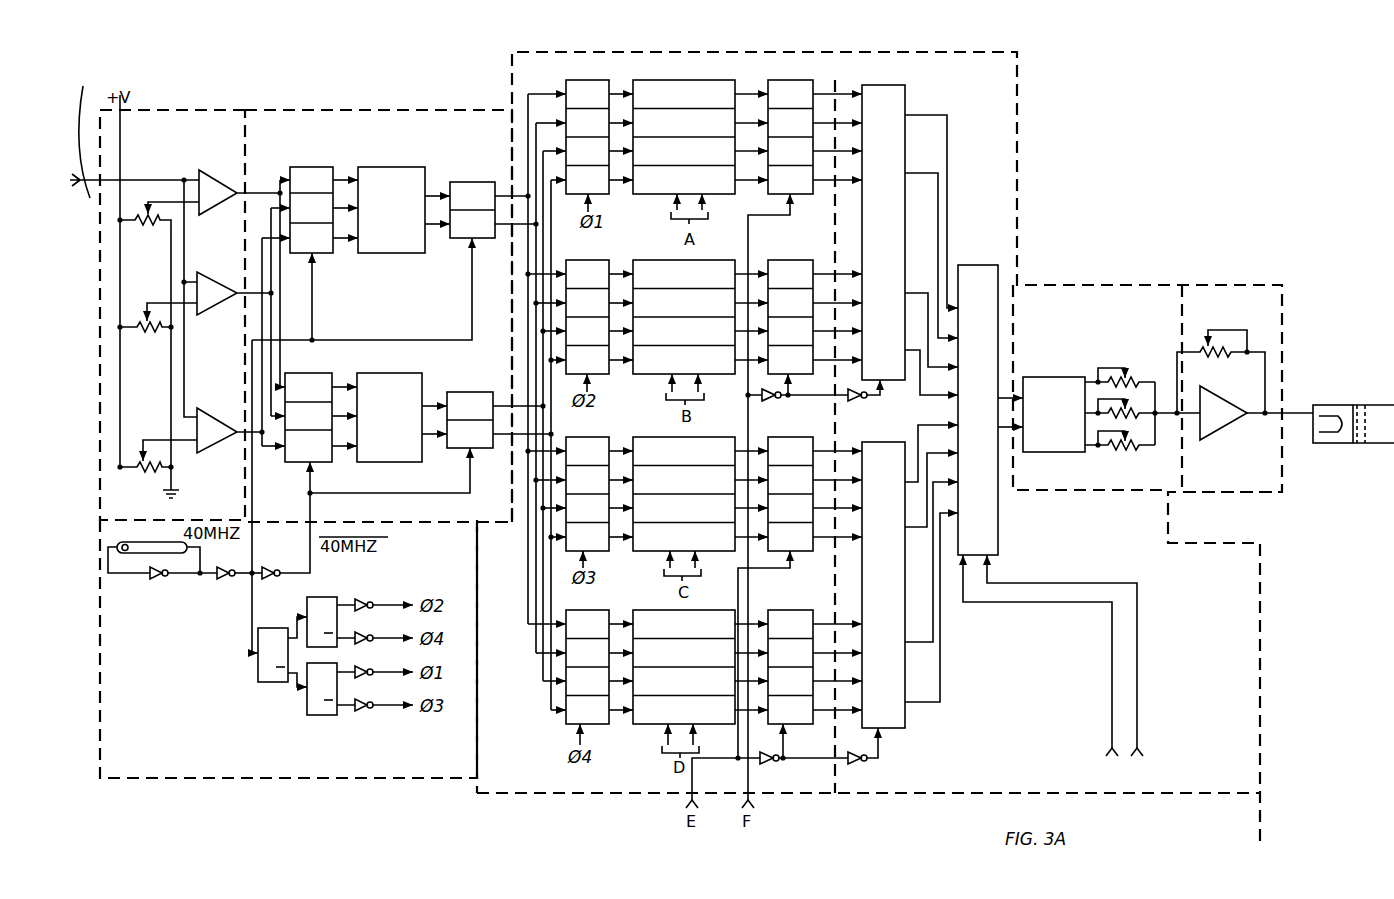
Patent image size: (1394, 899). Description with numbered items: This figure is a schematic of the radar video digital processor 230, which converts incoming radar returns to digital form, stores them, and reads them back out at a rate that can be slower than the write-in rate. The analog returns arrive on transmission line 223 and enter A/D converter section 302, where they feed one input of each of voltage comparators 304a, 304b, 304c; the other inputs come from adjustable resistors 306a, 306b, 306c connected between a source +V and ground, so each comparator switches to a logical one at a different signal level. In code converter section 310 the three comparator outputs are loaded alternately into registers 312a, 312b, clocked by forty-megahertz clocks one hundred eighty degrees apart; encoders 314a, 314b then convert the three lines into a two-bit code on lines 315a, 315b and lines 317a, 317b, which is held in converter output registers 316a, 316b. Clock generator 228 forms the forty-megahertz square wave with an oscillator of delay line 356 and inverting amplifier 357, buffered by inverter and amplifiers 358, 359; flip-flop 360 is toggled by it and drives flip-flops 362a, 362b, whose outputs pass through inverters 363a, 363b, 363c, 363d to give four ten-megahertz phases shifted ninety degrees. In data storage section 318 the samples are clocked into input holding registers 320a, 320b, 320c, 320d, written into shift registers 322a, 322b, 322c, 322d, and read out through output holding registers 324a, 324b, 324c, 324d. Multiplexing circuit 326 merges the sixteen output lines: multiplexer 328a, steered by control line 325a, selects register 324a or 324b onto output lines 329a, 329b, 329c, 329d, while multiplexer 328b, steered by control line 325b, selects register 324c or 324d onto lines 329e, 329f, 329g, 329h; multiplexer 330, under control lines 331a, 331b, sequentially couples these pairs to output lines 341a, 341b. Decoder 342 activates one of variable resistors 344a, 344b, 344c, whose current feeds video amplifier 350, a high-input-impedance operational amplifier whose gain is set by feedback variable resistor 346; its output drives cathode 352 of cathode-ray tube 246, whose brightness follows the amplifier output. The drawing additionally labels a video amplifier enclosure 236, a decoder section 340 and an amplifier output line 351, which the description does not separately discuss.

The transmission line 223 is at (129, 132).
The clock generator 228 is at (338, 776).
The radar video digital processor 230 is at (1020, 200).
The video amplifier 236 is at (1285, 353).
The cathode-ray tube 246 is at (1356, 447).
The A/D converter section 302 is at (186, 161).
The voltage comparator 304a is at (228, 197).
The voltage comparator 304b is at (226, 300).
The voltage comparator 304c is at (222, 440).
The adjustable resistor 306a is at (155, 228).
The adjustable resistor 306b is at (153, 338).
The adjustable resistor 306c is at (146, 470).
The code converter section 310 is at (378, 316).
The input register 312a is at (316, 170).
The input register 312b is at (296, 465).
The encoder 314a is at (387, 170).
The encoder 314b is at (397, 468).
The encoder output line 315a is at (432, 193).
The encoder output line 315b is at (431, 230).
The converter output register 316a is at (471, 181).
The converter output register 316b is at (456, 450).
The encoder output line 317a is at (436, 404).
The encoder output line 317b is at (431, 432).
The data storage section 318 is at (645, 784).
The input holding register 320a is at (600, 197).
The input holding register 320b is at (604, 378).
The input holding register 320c is at (605, 553).
The input holding register 320d is at (568, 727).
The shift register 322a is at (723, 198).
The shift register 322b is at (725, 378).
The shift register 322c is at (722, 555).
The shift register 322d is at (652, 727).
The output holding register 324a is at (806, 198).
The output holding register 324b is at (800, 382).
The output holding register 324c is at (800, 553).
The output holding register 324d is at (810, 727).
The control line 325a is at (862, 400).
The control line 325b is at (880, 750).
The multiplexing circuit 326 is at (1046, 784).
The multiplexer 328a is at (905, 105).
The multiplexer 328b is at (905, 722).
The multiplexer output line 329a is at (948, 146).
The multiplexer output line 329b is at (939, 180).
The multiplexer output line 329c is at (912, 292).
The multiplexer output line 329d is at (920, 383).
The multiplexer output line 329e is at (918, 434).
The multiplexer output line 329f is at (917, 532).
The multiplexer output line 329g is at (935, 630).
The multiplexer output line 329h is at (940, 675).
The multiplexer 330 is at (990, 265).
The control line 331a is at (1115, 677).
The control line 331b is at (1140, 713).
The decoder section 340 is at (1125, 493).
The output line 341a is at (1004, 395).
The output line 341b is at (1009, 425).
The decoder 342 is at (1065, 378).
The variable resistor 344a is at (1140, 377).
The variable resistor 344b is at (1112, 407).
The variable resistor 344c is at (1123, 448).
The feedback variable resistor 346 is at (1229, 350).
The video amplifier 350 is at (1223, 399).
The amplifier output line 351 is at (1298, 410).
The cathode 352 is at (1336, 445).
The delay line 356 is at (160, 542).
The inverting amplifier 357 is at (170, 585).
The inverter and amplifier 358 is at (227, 585).
The inverter and amplifier 359 is at (286, 548).
The flip-flop 360 is at (260, 683).
The flip-flop 362a is at (323, 604).
The flip-flop 362b is at (312, 716).
The inverter 363a is at (386, 605).
The inverter 363b is at (385, 629).
The inverter 363c is at (385, 663).
The inverter 363d is at (385, 697).